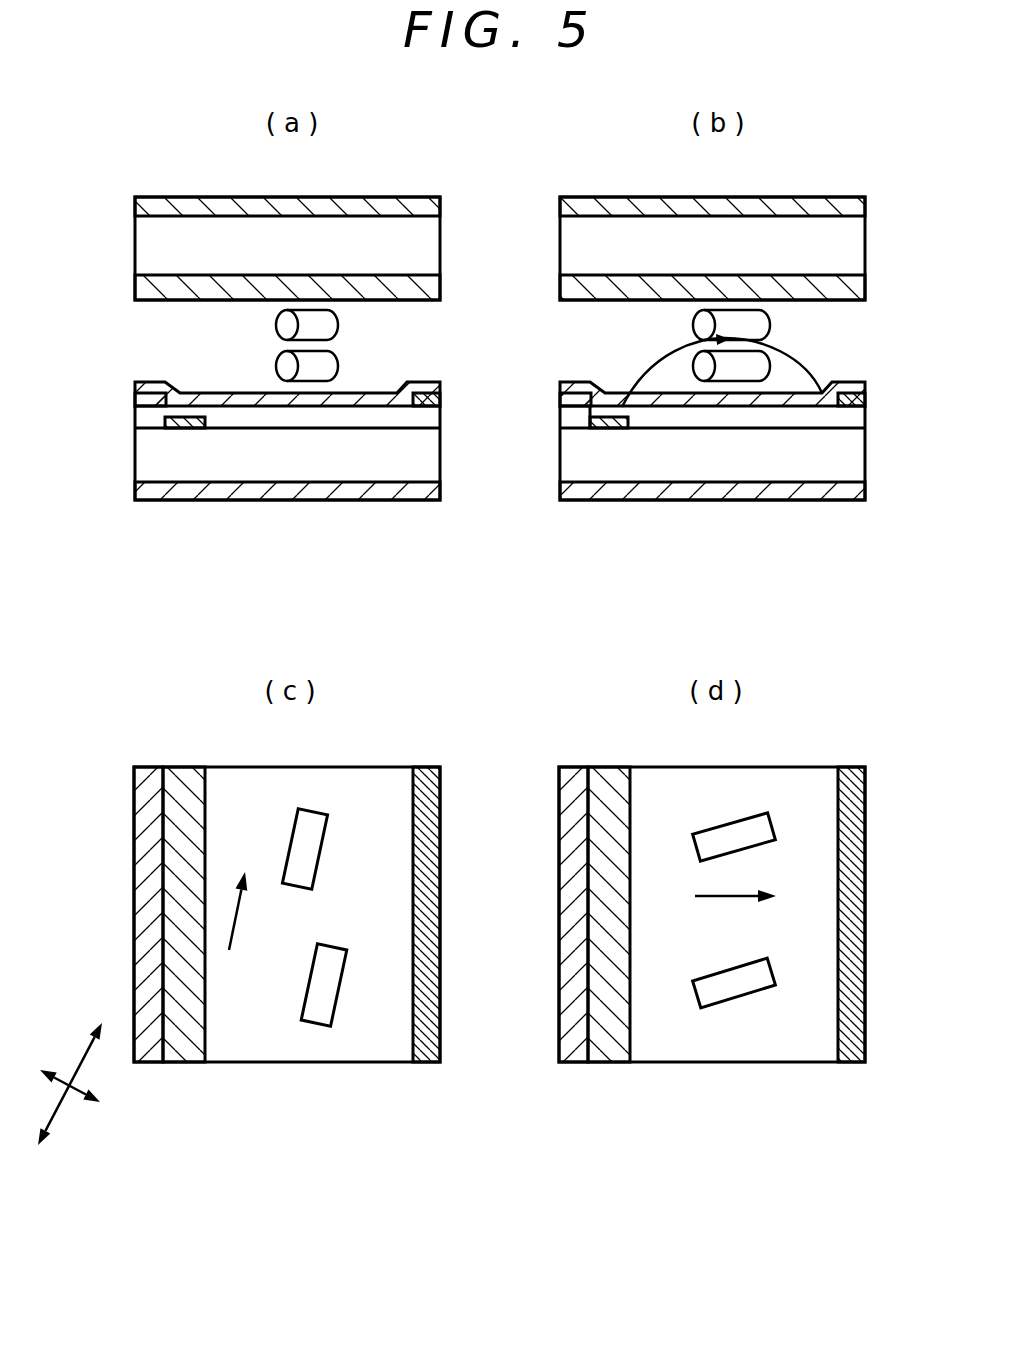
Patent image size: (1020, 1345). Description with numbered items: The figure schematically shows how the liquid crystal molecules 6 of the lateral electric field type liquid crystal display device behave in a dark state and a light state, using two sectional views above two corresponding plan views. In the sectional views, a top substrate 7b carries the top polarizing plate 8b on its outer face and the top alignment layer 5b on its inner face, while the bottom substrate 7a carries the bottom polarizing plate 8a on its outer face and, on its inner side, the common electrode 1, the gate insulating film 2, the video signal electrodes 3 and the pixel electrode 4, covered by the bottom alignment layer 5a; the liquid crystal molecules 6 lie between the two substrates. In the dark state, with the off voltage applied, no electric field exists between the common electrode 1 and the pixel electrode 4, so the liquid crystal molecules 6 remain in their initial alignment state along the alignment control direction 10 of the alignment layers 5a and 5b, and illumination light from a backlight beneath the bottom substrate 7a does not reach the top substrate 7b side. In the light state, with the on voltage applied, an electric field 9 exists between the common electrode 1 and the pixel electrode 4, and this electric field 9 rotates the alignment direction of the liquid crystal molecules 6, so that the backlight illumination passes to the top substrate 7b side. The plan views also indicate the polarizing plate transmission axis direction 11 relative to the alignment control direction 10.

The common electrode 1 is at (193, 428).
The gate insulating film 2 is at (331, 428).
The video signal electrode 3 is at (135, 398).
The pixel electrode 4 is at (440, 398).
The bottom alignment layer 5a is at (432, 382).
The top alignment layer 5b is at (430, 290).
The liquid crystal molecules 6 is at (342, 365).
The bottom substrate 7a is at (150, 465).
The top substrate 7b is at (150, 257).
The bottom polarizing plate 8a is at (155, 494).
The top polarizing plate 8b is at (178, 204).
The electric field 9 is at (668, 360).
The alignment control direction 10 is at (238, 922).
The polarizing plate transmission axis direction 11 is at (63, 1106).